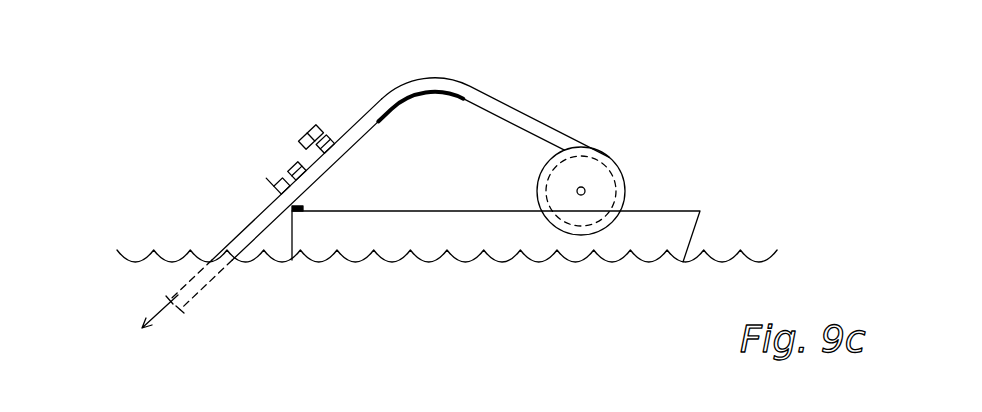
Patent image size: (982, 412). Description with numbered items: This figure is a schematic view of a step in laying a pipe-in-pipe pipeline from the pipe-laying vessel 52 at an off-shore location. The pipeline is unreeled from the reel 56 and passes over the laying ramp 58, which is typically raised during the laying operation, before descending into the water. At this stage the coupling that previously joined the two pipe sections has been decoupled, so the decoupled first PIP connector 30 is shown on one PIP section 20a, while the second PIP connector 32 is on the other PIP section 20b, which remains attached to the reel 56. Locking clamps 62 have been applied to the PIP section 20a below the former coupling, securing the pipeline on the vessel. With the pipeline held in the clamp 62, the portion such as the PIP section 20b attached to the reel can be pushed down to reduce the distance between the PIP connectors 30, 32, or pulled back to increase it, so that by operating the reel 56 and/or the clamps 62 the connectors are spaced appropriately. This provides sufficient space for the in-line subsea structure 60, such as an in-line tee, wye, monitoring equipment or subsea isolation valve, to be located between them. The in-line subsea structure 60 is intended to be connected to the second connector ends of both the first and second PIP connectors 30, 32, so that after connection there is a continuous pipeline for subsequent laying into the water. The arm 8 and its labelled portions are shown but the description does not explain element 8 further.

The arm 8 is at (375, 198).
The PIP section 20a is at (205, 288).
The PIP section 20b is at (477, 92).
The first PIP connector 30 is at (312, 170).
The second PIP connector 32 is at (331, 154).
The pipe-laying vessel 52 is at (701, 225).
The reel 56 is at (617, 165).
The laying ramp 58 is at (387, 125).
The in-line subsea structure 60 is at (302, 137).
The locking clamps 62 is at (277, 193).